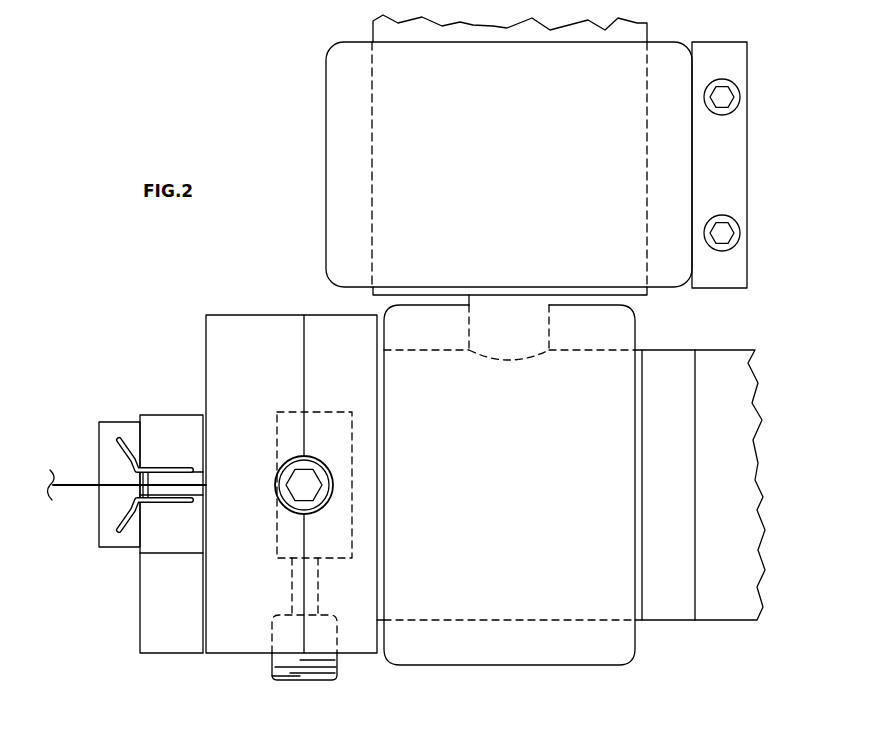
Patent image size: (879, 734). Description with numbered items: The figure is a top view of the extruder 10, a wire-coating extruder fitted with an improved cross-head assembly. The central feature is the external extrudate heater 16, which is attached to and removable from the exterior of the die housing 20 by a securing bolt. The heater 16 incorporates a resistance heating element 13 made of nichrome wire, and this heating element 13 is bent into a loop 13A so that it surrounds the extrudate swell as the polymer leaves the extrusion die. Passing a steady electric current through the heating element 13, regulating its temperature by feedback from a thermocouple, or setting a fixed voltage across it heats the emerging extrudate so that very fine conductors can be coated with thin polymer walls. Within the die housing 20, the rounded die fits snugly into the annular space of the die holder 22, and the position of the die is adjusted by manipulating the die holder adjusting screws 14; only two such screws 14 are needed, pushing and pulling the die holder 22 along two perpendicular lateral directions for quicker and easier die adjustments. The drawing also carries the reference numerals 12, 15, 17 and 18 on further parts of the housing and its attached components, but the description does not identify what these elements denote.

The extruder 10 is at (200, 90).
The housing body 12 is at (327, 108).
The resistance heating element 13 is at (119, 526).
The loop 13A is at (163, 468).
The die holder adjusting screws 14 is at (275, 484).
The slot 15 is at (435, 622).
The external extrudate heater 16 is at (115, 421).
The channel 17 is at (373, 160).
The wire 18 is at (75, 482).
The die housing 20 is at (186, 323).
The die holder 22 is at (277, 428).